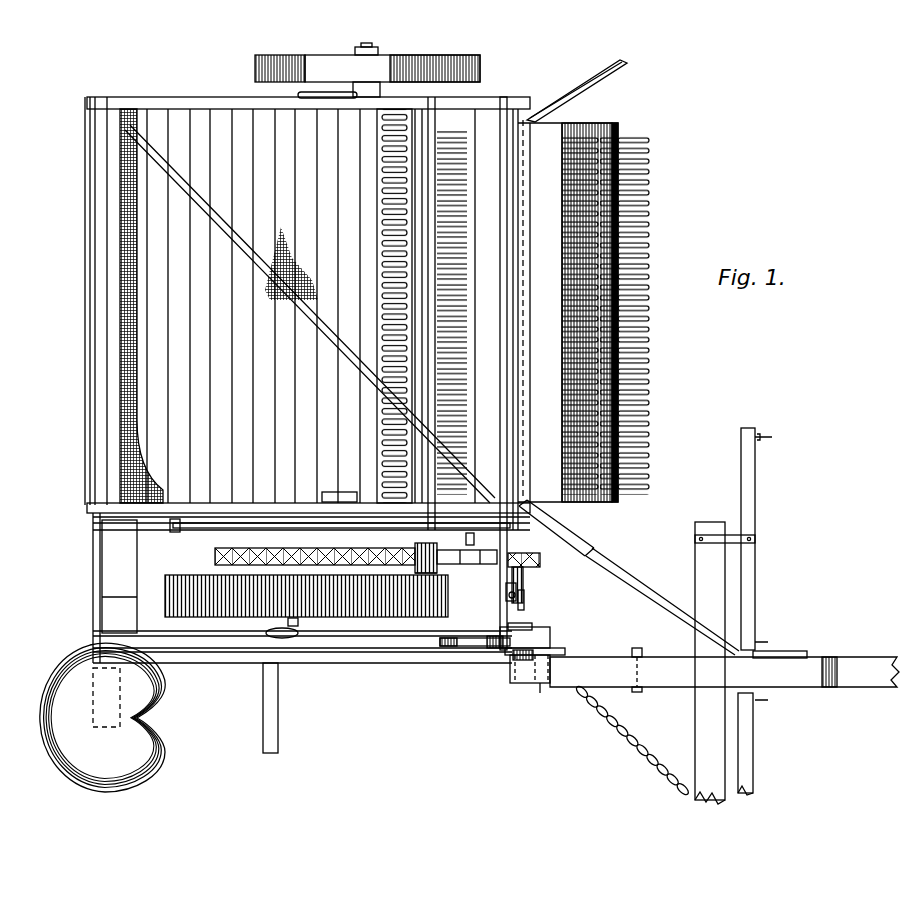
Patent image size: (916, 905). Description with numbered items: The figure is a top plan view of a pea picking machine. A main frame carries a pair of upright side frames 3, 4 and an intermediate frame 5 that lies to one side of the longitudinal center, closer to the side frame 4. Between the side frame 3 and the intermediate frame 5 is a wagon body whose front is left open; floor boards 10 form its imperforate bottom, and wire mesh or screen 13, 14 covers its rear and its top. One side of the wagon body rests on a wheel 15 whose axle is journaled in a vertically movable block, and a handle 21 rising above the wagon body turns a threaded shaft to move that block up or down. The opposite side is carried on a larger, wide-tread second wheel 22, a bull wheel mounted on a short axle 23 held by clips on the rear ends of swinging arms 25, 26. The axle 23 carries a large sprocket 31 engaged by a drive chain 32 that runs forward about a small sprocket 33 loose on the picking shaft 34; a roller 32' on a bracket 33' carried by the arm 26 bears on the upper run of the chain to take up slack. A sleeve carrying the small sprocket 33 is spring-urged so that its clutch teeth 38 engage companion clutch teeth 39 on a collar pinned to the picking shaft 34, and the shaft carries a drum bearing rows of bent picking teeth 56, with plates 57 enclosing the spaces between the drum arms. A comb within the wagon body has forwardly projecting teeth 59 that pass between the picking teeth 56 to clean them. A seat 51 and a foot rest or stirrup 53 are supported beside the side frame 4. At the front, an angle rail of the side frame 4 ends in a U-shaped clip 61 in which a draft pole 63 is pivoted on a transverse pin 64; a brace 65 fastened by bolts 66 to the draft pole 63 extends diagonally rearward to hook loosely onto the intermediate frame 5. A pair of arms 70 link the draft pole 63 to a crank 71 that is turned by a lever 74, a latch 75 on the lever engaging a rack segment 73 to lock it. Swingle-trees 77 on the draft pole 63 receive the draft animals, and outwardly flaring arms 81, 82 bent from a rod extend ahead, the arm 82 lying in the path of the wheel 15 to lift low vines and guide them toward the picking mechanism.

The side frame 3 is at (175, 100).
The side frame 4 is at (364, 664).
The intermediate frame 5 is at (112, 523).
The floor boards 10 is at (157, 328).
The wire mesh or screen 13 is at (88, 408).
The wire mesh or screen 14 is at (128, 365).
The wheel 15 is at (480, 62).
The handle 21 is at (300, 95).
The second wheel 22 is at (175, 582).
The axle 23 is at (275, 632).
The swinging arm 25 is at (505, 588).
The swinging arm 26 is at (468, 545).
The large sprocket 31 is at (232, 545).
The drive chain 32 is at (563, 593).
The roller 32' is at (458, 515).
The small sprocket 33 is at (551, 574).
The bracket 33' is at (458, 495).
The picking shaft 34 is at (532, 626).
The clutch teeth 38 is at (509, 600).
The clutch teeth 39 is at (524, 600).
The seat 51 is at (148, 752).
The foot rest or stirrup 53 is at (263, 722).
The picking teeth 56 is at (650, 150).
The plates 57 is at (620, 125).
The comb teeth 59 is at (383, 186).
The U-shaped clip 61 is at (517, 684).
The draft pole 63 is at (862, 657).
The transverse pin 64 is at (525, 688).
The brace 65 is at (640, 590).
The bolts 66 is at (775, 651).
The arms 70 is at (637, 648).
The crank 71 is at (547, 688).
The rack segment 73 is at (512, 656).
The lever 74 is at (330, 650).
The latch 75 is at (497, 648).
The swingle-trees 77 is at (756, 582).
The arm 81 is at (572, 535).
The arm 82 is at (588, 84).